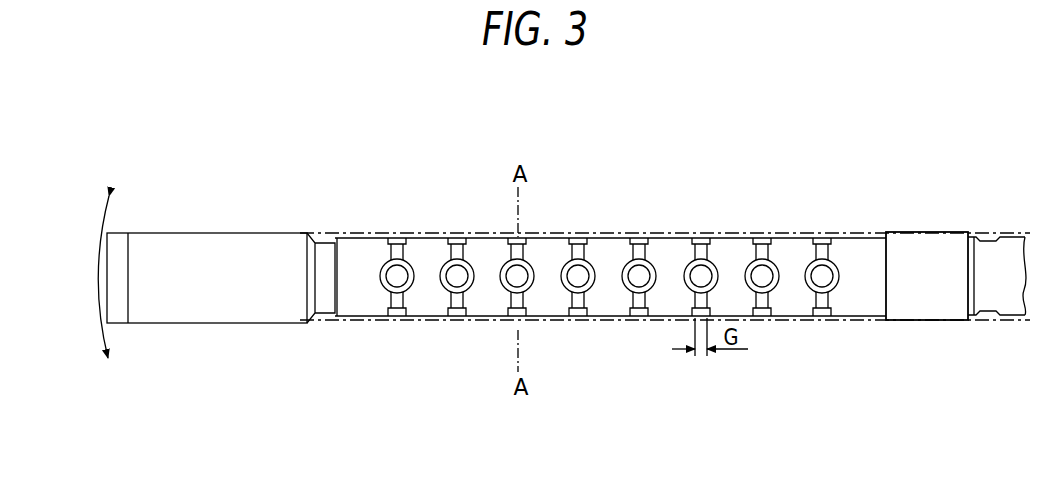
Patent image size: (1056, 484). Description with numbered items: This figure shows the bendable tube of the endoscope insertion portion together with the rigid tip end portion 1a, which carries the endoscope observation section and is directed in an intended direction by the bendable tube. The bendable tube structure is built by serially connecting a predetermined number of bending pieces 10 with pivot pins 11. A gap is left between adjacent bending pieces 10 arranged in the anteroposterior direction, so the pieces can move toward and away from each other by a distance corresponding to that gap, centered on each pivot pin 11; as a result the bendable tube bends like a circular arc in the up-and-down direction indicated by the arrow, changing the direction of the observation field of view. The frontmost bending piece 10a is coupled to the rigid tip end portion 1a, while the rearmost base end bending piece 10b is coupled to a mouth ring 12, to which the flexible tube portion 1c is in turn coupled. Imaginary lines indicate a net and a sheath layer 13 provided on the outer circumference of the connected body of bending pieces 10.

The rigid tip end portion 1a is at (253, 233).
The flexible tube portion 1c is at (985, 231).
The bending pieces 10 is at (479, 235).
The frontmost bending piece 10a is at (357, 298).
The rearmost base end bending piece 10b is at (863, 290).
The pivot pins 11 is at (613, 235).
The mouth ring 12 is at (917, 292).
The sheath layer 13 is at (872, 231).